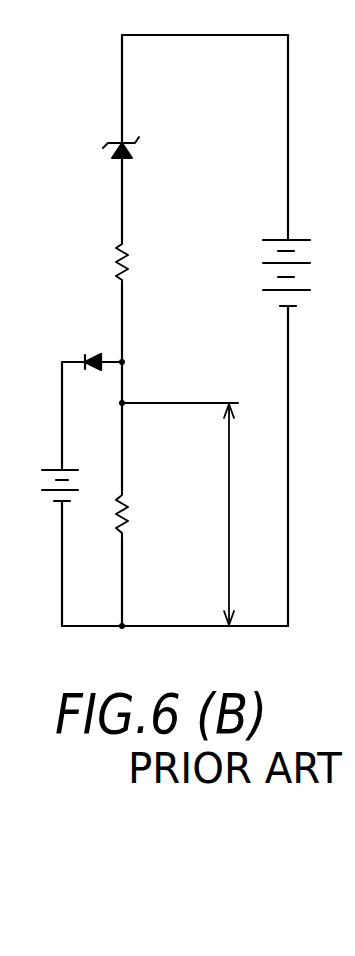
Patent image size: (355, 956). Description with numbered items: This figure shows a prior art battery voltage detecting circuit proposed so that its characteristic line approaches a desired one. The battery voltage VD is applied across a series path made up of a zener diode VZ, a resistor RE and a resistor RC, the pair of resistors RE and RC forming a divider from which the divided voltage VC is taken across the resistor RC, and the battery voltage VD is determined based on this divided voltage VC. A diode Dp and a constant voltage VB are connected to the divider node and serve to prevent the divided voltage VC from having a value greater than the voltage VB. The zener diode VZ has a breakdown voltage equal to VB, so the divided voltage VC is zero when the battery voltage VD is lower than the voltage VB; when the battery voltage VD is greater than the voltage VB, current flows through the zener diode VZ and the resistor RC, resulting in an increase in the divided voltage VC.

The zener diode VZ is at (140, 149).
The resistor RE is at (146, 261).
The diode Dp is at (84, 342).
The constant voltage VB is at (49, 464).
The battery voltage VD is at (297, 250).
The resistor RC is at (146, 513).
The divided voltage VC is at (247, 514).